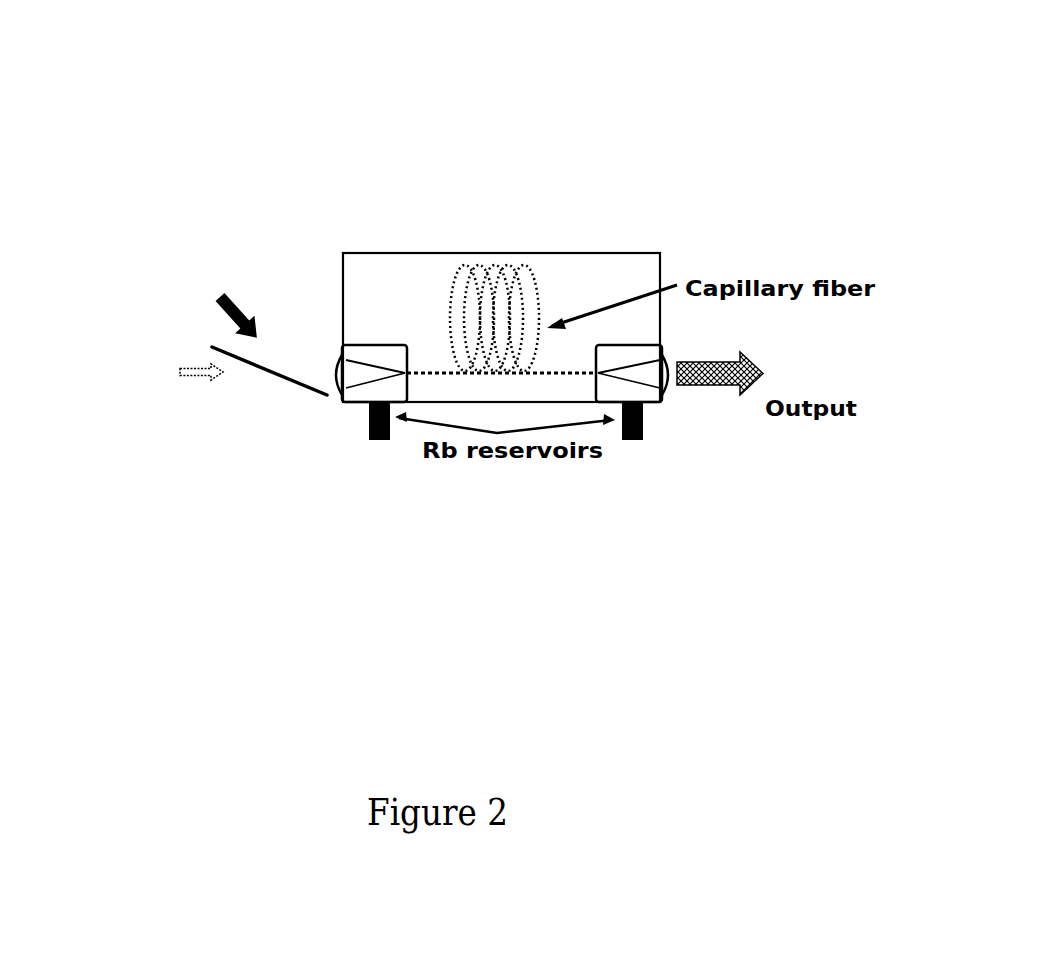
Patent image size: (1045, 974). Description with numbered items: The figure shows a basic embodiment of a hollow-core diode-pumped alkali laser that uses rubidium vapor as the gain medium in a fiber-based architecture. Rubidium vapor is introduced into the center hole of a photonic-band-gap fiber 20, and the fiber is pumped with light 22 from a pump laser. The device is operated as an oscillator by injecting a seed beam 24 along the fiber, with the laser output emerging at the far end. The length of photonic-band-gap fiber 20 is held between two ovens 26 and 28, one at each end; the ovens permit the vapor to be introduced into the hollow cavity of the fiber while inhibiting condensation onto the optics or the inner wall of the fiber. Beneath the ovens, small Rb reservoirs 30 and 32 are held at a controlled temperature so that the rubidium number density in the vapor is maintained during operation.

The photonic-band-gap fiber 20 is at (427, 373).
The pump light 22 is at (250, 251).
The seed beam 24 is at (124, 445).
The oven 26 is at (382, 345).
The oven 28 is at (627, 346).
The Rb reservoir 30 is at (383, 442).
The Rb reservoir 32 is at (720, 583).